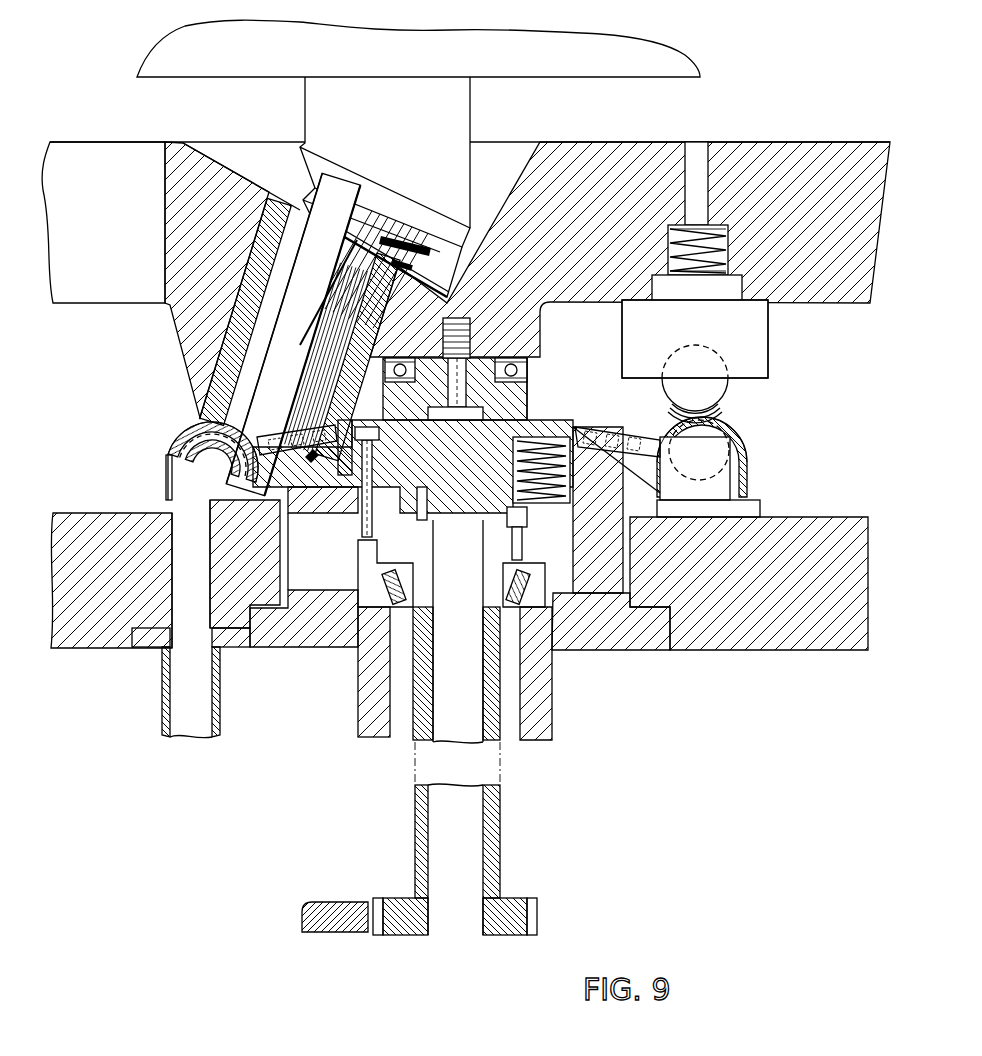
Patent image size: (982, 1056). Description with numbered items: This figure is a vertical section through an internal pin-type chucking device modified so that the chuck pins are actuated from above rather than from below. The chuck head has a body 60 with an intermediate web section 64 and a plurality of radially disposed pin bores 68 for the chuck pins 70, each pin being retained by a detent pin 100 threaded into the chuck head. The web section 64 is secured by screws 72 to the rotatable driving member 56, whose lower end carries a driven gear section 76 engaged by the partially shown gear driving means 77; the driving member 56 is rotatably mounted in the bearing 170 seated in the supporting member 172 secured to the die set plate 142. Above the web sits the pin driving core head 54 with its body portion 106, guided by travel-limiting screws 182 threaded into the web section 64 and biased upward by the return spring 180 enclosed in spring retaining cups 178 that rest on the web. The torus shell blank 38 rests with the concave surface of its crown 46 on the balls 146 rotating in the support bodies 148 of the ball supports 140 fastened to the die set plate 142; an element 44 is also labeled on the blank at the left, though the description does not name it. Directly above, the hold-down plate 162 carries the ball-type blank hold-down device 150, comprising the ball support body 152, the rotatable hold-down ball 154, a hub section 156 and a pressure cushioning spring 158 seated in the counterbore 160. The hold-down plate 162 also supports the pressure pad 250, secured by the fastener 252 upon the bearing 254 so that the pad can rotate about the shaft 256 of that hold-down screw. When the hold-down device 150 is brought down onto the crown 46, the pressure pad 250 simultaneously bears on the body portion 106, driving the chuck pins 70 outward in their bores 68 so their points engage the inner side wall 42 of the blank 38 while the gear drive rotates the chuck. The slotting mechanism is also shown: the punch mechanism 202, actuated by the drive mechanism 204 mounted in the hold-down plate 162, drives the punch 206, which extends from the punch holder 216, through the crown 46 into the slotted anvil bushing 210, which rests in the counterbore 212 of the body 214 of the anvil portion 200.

The torus shell blank 38 is at (195, 417).
The inner side wall 42 is at (312, 445).
The retainer ring 44 is at (172, 463).
The crown 46 is at (205, 409).
The pin driving core head 54 is at (480, 495).
The driving member 56 is at (493, 795).
The body 60 is at (607, 565).
The web section 64 is at (443, 522).
The pin bores 68 is at (604, 445).
The chuck pins 70 is at (311, 459).
The screws 72 is at (526, 517).
The driven gear section 76 is at (520, 920).
The gear driving means 77 is at (343, 913).
The detent pin 100 is at (323, 421).
The body portion 106 is at (512, 417).
The ball supports 140 is at (766, 497).
The die set plate 142 is at (84, 518).
The balls 146 is at (720, 427).
The support bodies 148 is at (720, 475).
The ball-type blank hold-down device 150 is at (775, 319).
The ball support body 152 is at (758, 348).
The hold-down ball 154 is at (716, 408).
The hub section 156 is at (732, 292).
The pressure cushioning spring 158 is at (724, 238).
The counterbore 160 is at (660, 242).
The hold-down plate 162 is at (830, 152).
The bearing 170 is at (382, 602).
The supporting member 172 is at (538, 695).
The spring retaining cups 178 is at (574, 500).
The biasing return spring 180 is at (530, 464).
The guide travel-limiting screws 182 is at (368, 463).
The anvil portion 200 is at (160, 500).
The punch mechanism 202 is at (207, 380).
The drive mechanism 204 is at (478, 106).
The punch 206 is at (290, 350).
The anvil bushing 210 is at (195, 456).
The counterbore 212 is at (178, 450).
The body 214 is at (233, 514).
The punch holder 216 is at (308, 251).
The pressure pad 250 is at (518, 393).
The fastener 252 is at (440, 423).
The bearing 254 is at (528, 367).
The shaft 256 is at (457, 373).